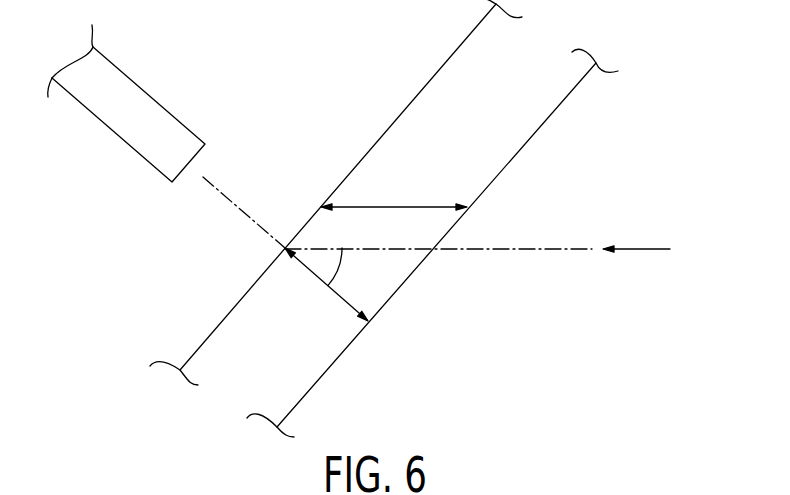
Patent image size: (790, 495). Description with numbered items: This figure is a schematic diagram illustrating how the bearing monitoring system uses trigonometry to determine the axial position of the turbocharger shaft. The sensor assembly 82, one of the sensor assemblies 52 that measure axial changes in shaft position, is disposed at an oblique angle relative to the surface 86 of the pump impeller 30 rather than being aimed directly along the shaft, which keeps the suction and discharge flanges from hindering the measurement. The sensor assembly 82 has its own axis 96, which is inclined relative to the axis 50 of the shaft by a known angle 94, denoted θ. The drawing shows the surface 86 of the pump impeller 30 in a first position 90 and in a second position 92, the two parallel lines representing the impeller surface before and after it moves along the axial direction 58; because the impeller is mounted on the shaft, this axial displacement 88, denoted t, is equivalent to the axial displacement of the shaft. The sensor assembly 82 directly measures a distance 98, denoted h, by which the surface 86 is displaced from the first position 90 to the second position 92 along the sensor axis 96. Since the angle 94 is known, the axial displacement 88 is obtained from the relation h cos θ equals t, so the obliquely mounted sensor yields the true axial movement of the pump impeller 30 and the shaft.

The pump impeller 30 is at (376, 218).
The axis 50 is at (513, 250).
The sensor assemblies 52 is at (155, 103).
The axial direction 58 is at (643, 249).
The sensor assembly 82 is at (122, 69).
The surface of the pump impeller 86 is at (376, 218).
The axial displacement 88 is at (398, 206).
The first position 90 is at (556, 131).
The second position 92 is at (372, 137).
The angle 94 is at (331, 280).
The axis of the sensor assembly 96 is at (243, 212).
The window spacing 98 is at (312, 271).